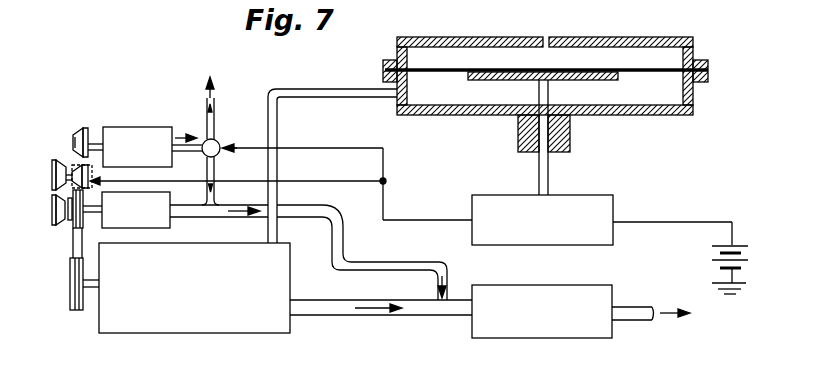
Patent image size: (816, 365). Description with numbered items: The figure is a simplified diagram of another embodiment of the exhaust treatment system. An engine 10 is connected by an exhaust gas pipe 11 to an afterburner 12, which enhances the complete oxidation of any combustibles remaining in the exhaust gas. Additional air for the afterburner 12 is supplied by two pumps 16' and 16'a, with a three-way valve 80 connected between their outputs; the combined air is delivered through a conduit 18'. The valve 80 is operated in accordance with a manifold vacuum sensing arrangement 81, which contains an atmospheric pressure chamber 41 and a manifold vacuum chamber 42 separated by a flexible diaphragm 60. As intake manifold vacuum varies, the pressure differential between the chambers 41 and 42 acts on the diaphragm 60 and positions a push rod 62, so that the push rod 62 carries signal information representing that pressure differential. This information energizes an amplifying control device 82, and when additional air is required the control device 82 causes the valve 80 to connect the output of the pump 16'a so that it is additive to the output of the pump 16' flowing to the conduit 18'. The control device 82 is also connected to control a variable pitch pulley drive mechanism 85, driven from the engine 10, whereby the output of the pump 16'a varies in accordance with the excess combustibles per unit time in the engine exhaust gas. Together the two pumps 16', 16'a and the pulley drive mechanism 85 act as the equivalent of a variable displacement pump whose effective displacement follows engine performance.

The variable pitch pulley drive mechanism 85 is at (52, 166).
The pump 16'a is at (145, 139).
The pump 16' is at (151, 205).
The three-way valve 80 is at (216, 144).
The engine 10 is at (217, 243).
The conduit 18' is at (333, 252).
The exhaust gas pipe 11 is at (320, 300).
The afterburner 12 is at (572, 285).
The amplifying control device 82 is at (575, 195).
The push rod 62 is at (538, 182).
The manifold vacuum sensing arrangement 81 is at (634, 37).
The atmospheric pressure chamber 41 is at (683, 58).
The manifold vacuum chamber 42 is at (683, 94).
The flexible diaphragm 60 is at (456, 74).